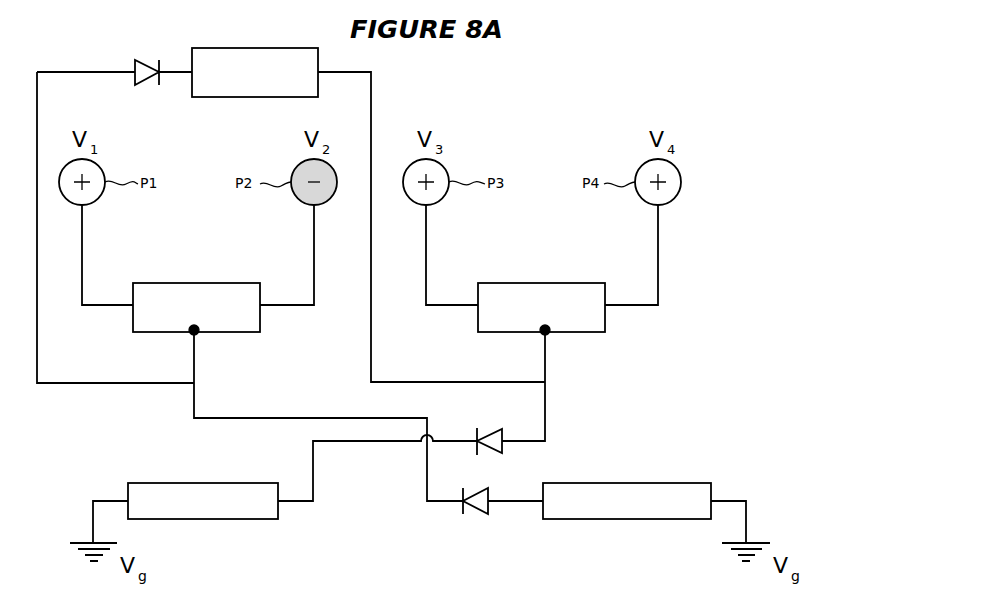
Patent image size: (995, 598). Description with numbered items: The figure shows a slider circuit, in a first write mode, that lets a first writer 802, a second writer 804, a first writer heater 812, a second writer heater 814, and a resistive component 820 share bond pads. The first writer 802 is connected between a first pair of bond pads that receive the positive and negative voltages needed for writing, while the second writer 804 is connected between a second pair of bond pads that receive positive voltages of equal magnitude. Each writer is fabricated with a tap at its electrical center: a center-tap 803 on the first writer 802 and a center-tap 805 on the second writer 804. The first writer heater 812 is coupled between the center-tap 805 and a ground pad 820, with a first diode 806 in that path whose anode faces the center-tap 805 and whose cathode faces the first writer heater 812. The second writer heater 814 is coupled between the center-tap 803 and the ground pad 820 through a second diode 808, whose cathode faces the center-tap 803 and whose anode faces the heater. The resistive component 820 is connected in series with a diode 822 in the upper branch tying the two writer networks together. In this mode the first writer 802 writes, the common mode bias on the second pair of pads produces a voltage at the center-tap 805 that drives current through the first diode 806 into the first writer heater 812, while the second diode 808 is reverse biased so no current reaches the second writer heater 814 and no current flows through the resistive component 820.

The first writer 802 is at (178, 283).
The center-tap 803 is at (192, 334).
The second writer 804 is at (560, 283).
The center-tap 805 is at (548, 334).
The first diode 806 is at (500, 430).
The second diode 808 is at (470, 489).
The first writer heater 812 is at (170, 483).
The second writer heater 814 is at (588, 483).
The resistive component 820 is at (258, 48).
The diode 822 is at (143, 60).